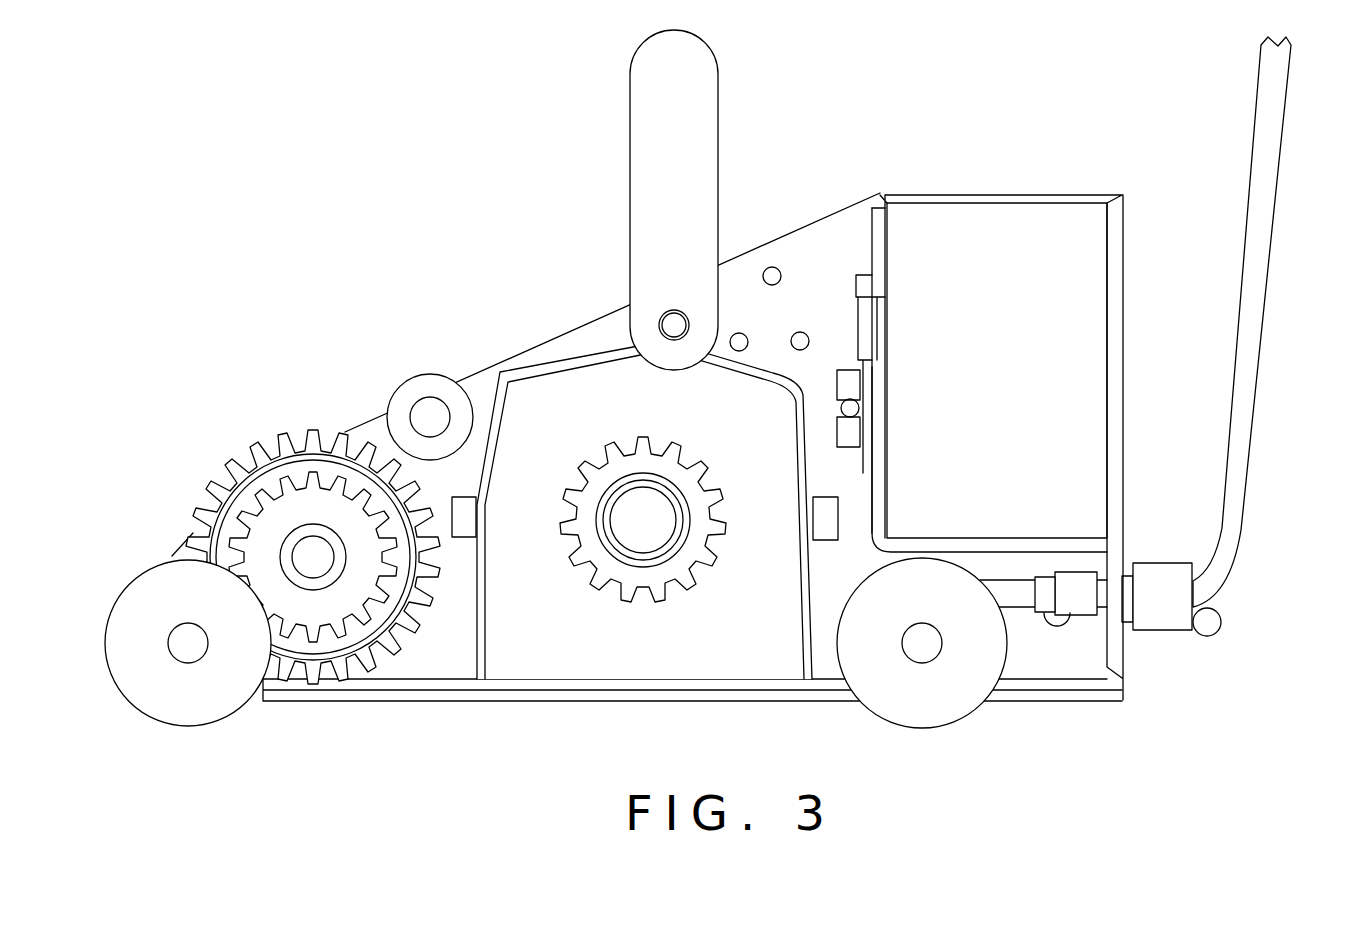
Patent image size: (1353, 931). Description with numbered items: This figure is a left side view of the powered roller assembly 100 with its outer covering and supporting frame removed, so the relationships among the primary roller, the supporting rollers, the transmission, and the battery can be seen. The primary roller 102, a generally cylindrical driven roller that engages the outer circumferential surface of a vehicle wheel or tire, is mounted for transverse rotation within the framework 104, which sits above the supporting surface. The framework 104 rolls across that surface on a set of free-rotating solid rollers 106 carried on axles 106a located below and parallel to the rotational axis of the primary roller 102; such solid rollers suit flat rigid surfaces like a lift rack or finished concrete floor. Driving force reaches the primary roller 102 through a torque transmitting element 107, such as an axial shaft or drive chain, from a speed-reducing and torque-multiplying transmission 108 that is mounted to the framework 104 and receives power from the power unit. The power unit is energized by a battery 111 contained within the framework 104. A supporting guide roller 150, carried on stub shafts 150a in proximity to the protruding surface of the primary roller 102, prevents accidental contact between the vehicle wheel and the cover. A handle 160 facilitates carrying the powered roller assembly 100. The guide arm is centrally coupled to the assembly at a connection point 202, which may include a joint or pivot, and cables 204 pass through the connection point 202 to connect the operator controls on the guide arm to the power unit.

The powered roller assembly 100 is at (415, 230).
The primary roller 102 is at (293, 430).
The framework 104 is at (425, 702).
The free-rotating solid rollers 106 is at (235, 715).
The axles 106a is at (200, 663).
The torque transmitting element 107 is at (375, 597).
The transmission 108 is at (600, 398).
The battery 111 is at (1005, 247).
The supporting guide roller 150 is at (410, 378).
The stub shafts 150a is at (430, 398).
The handle 160 is at (630, 133).
The connection point 202 is at (1160, 632).
The cables 204 is at (1245, 525).